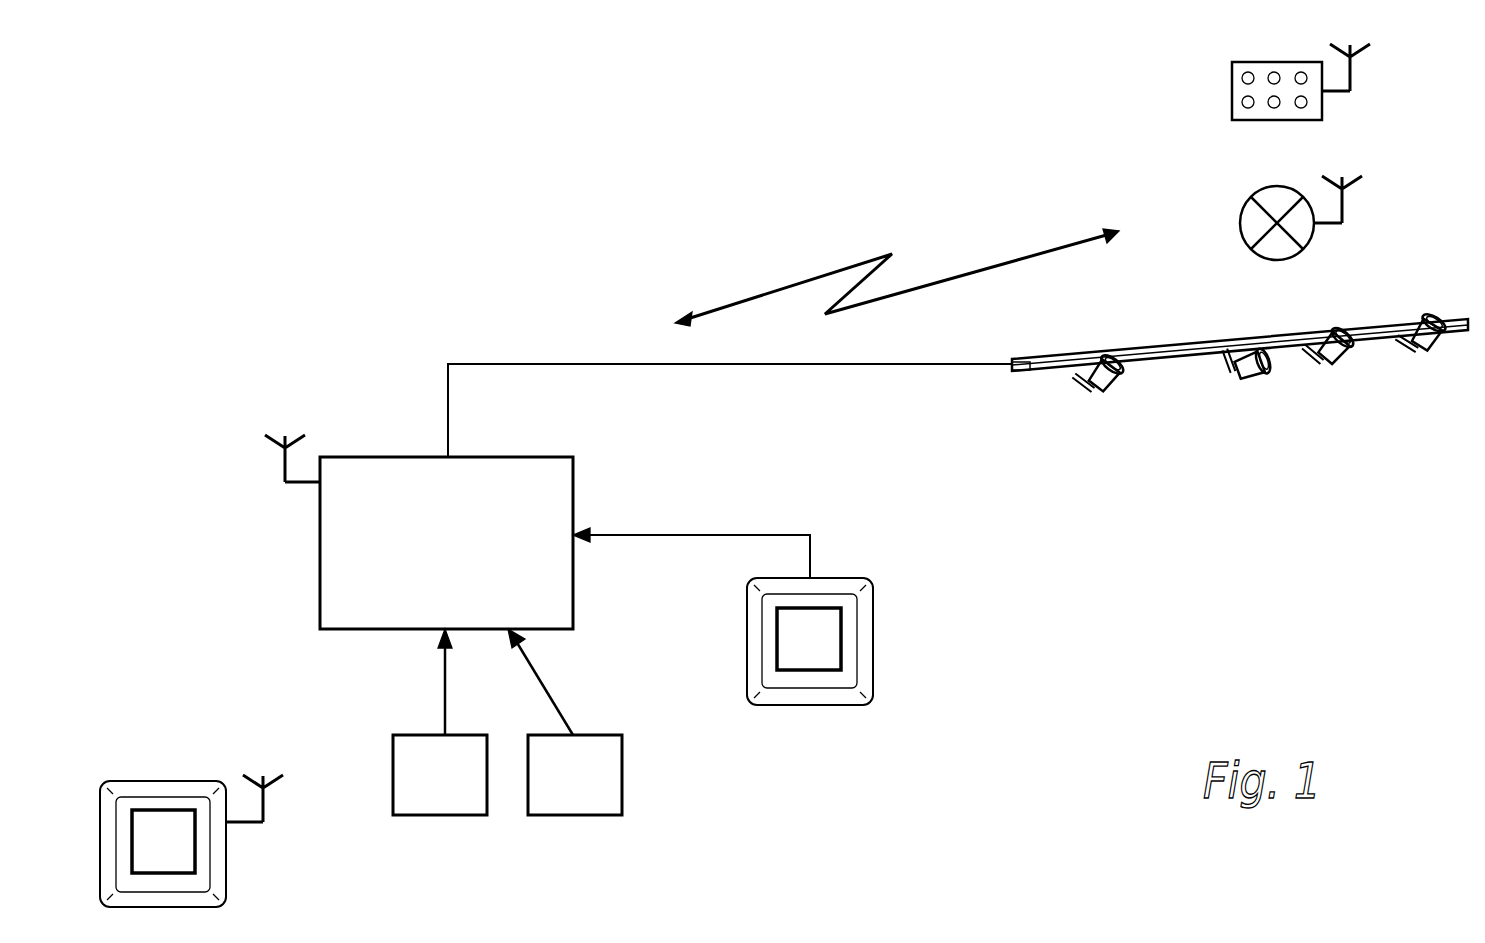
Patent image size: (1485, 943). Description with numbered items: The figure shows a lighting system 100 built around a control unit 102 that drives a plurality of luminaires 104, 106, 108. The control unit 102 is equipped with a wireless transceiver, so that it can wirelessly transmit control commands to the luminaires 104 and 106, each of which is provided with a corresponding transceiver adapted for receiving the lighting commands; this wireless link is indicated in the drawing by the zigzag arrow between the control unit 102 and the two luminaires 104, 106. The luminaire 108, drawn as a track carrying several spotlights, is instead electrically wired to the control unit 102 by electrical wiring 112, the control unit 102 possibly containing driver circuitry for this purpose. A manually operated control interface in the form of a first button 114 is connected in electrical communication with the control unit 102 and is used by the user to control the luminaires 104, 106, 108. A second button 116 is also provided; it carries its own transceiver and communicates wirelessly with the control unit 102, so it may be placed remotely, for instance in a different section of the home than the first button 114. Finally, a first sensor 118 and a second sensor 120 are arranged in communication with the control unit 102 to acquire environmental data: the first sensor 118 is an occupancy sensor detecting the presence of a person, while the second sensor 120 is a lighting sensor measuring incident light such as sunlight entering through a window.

The lighting system 100 is at (265, 268).
The control unit 102 is at (573, 480).
The luminaire 104 is at (1232, 91).
The luminaire 106 is at (1240, 222).
The luminaire 108 is at (1462, 318).
The electrical wiring 112 is at (863, 364).
The first button 114 is at (857, 650).
The second button 116 is at (218, 863).
The first sensor 118 is at (622, 770).
The second sensor 120 is at (450, 815).